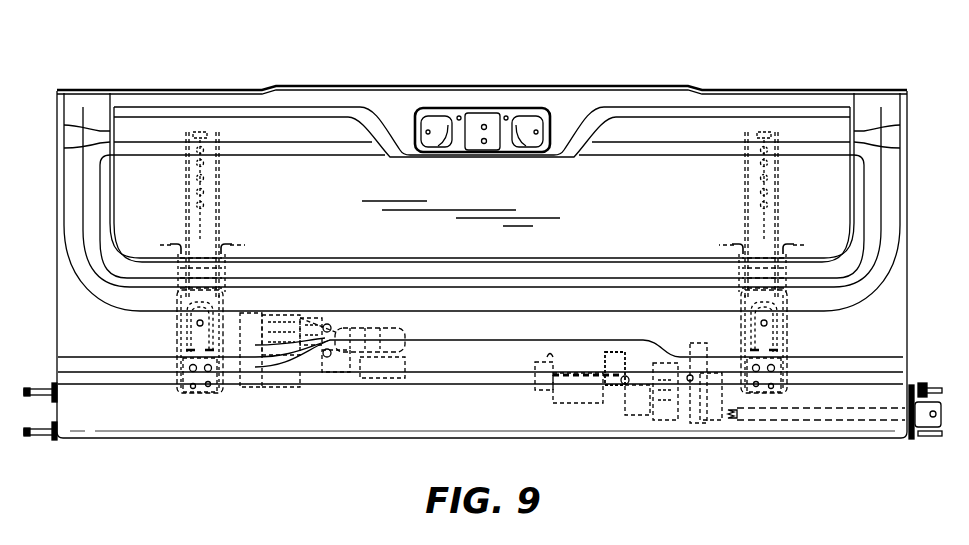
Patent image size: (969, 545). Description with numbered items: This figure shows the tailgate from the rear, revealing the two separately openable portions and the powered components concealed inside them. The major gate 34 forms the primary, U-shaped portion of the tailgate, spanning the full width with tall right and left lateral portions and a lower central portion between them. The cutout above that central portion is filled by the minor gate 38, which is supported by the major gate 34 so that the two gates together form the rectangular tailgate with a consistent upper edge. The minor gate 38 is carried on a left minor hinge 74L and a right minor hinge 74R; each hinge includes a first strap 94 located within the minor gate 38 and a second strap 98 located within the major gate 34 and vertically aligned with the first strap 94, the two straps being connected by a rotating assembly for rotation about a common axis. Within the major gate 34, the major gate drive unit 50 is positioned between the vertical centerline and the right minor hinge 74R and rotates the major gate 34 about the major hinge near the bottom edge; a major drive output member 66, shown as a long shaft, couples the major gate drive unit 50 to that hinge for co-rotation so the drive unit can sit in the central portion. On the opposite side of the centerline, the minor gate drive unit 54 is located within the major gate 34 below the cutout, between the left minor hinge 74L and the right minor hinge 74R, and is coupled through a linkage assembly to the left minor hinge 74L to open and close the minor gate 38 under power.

The major gate 34 is at (115, 407).
The minor gate 38 is at (332, 173).
The major gate drive unit 50 is at (600, 423).
The minor gate drive unit 54 is at (313, 408).
The major drive output member 66 is at (845, 412).
The left minor hinge 74L is at (247, 268).
The right minor hinge 74R is at (717, 268).
The first strap 94 is at (182, 174).
The second strap 98 is at (177, 340).